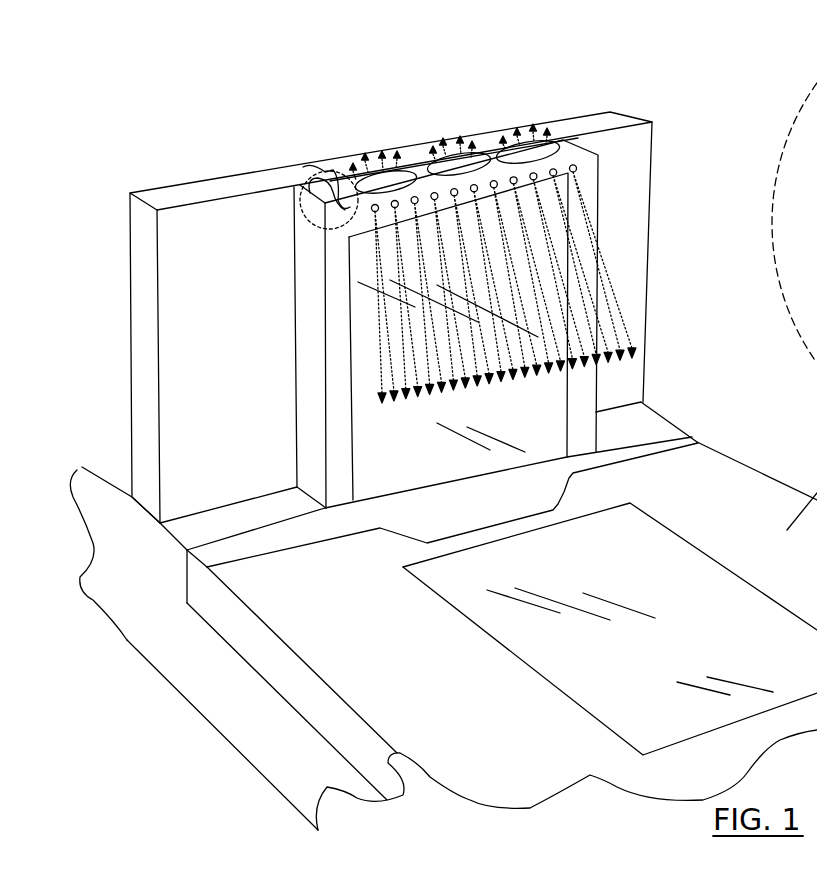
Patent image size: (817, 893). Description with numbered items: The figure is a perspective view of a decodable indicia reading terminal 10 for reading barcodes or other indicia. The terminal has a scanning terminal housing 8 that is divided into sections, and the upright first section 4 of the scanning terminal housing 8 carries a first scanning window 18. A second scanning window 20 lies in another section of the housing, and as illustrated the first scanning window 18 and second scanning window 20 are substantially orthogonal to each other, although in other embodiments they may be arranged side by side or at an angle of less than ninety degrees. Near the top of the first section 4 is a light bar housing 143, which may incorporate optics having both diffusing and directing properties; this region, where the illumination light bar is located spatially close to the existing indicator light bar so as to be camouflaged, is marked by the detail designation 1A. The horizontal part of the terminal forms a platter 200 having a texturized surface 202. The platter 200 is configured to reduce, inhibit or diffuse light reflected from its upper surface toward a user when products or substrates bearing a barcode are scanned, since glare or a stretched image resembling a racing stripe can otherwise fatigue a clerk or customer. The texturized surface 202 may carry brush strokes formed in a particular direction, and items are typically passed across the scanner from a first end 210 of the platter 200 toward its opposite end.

The decodable indicia reading terminal 10 is at (204, 78).
The detail view region 1A is at (322, 177).
The first section 4 is at (188, 193).
The light bar housing 143 is at (422, 183).
The first scanning window 18 is at (580, 397).
The second scanning window 20 is at (695, 545).
The scanning terminal housing 8 is at (183, 662).
The platter 200 is at (323, 650).
The texturized surface 202 is at (360, 687).
The first end 210 is at (397, 718).